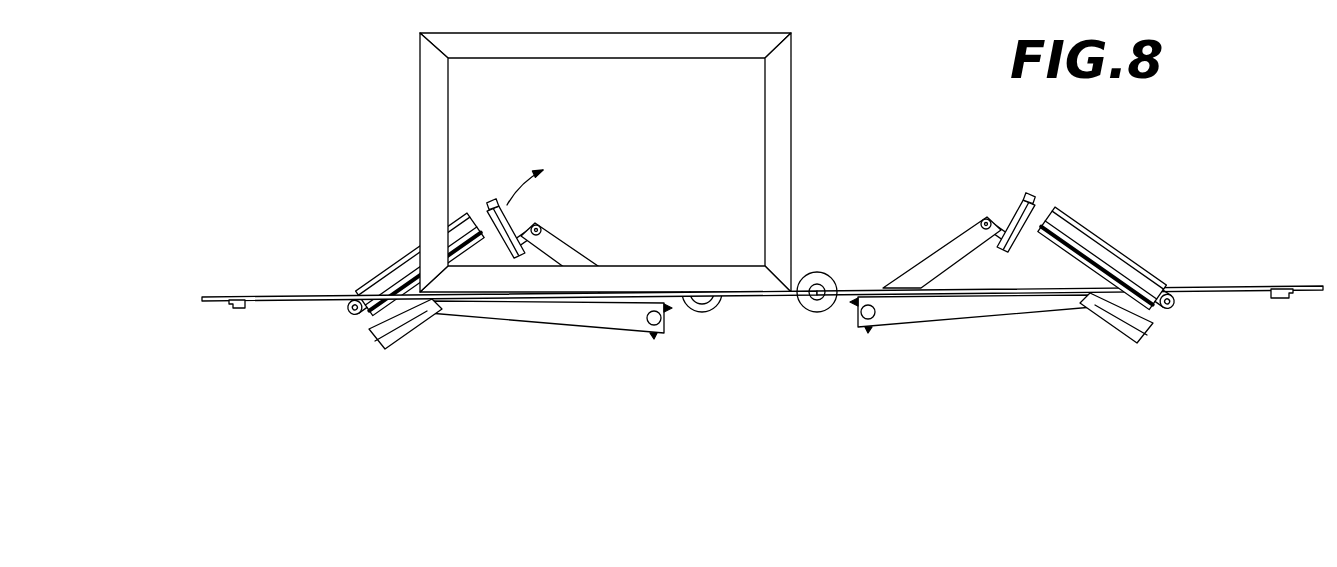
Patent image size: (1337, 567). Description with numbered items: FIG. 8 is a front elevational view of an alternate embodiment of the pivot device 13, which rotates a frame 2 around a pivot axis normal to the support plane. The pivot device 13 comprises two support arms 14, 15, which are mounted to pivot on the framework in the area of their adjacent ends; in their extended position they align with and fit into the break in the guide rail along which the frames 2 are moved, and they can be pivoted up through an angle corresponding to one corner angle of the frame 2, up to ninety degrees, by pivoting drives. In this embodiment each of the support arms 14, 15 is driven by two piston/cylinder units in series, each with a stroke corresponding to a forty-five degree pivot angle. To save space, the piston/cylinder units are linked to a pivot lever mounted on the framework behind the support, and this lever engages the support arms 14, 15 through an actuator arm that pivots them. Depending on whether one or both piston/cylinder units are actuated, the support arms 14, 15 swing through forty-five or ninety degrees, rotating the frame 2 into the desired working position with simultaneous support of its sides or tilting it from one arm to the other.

The frame 2 is at (780, 96).
The pivot device 13 is at (1029, 251).
The support arm 14 is at (278, 299).
The support arm 15 is at (1222, 288).